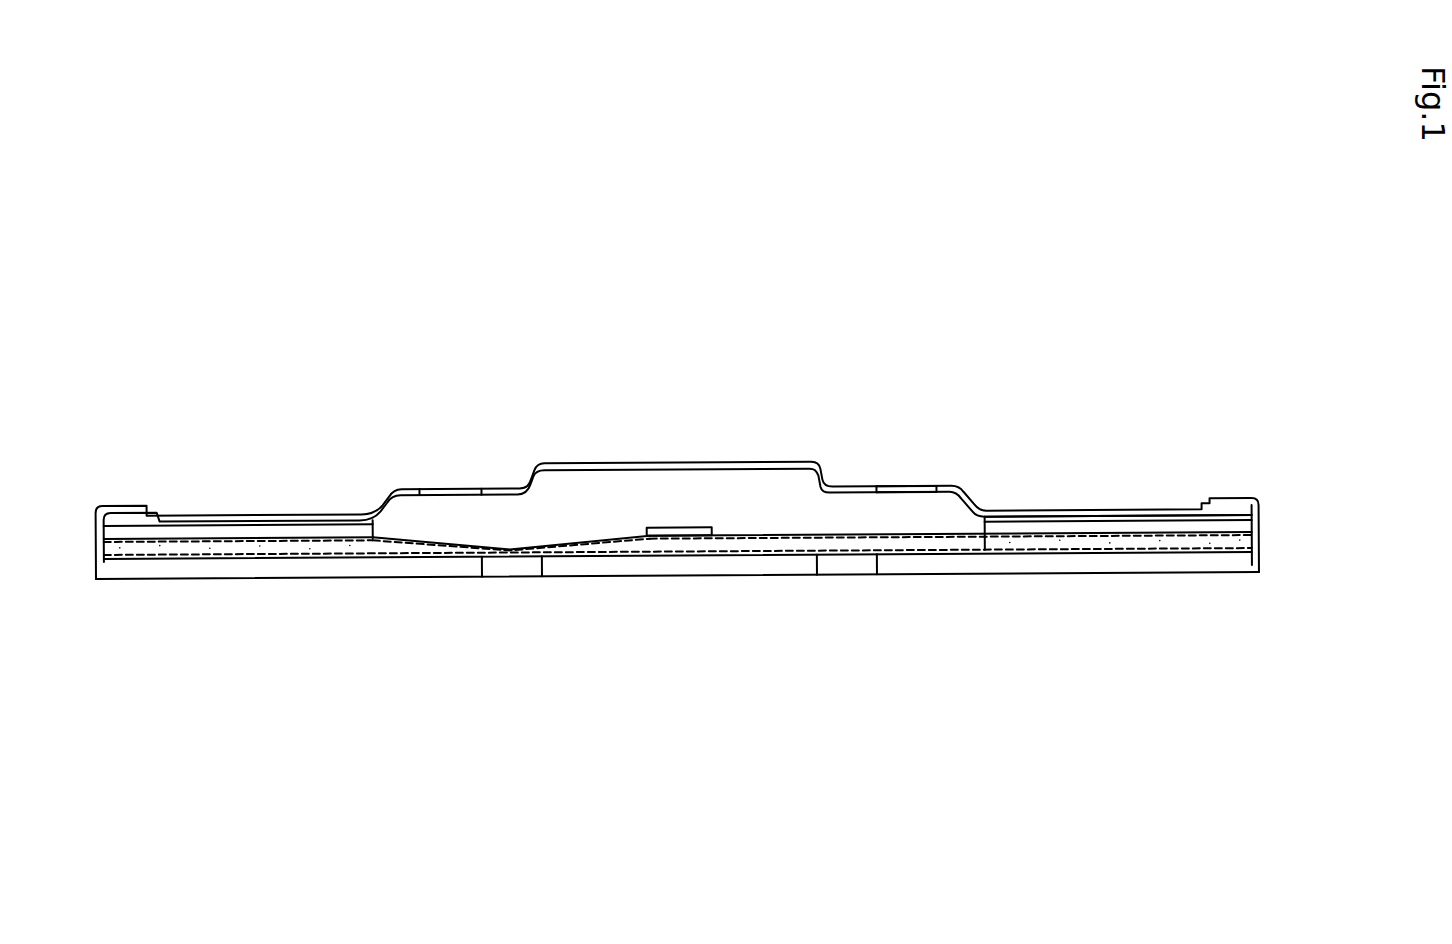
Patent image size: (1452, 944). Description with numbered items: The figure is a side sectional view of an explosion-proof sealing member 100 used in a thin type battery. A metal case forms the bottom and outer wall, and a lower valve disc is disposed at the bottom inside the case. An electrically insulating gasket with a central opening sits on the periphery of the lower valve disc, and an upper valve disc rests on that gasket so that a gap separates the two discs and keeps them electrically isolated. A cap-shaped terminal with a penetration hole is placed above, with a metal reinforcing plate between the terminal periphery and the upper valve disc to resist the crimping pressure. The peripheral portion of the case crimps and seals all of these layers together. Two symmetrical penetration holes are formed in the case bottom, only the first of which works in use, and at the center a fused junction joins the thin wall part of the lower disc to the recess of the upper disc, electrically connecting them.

The sealing member 100 is at (247, 381).